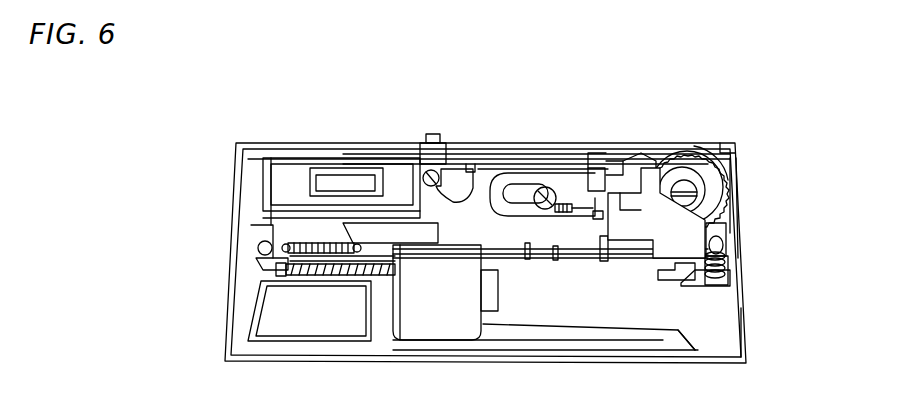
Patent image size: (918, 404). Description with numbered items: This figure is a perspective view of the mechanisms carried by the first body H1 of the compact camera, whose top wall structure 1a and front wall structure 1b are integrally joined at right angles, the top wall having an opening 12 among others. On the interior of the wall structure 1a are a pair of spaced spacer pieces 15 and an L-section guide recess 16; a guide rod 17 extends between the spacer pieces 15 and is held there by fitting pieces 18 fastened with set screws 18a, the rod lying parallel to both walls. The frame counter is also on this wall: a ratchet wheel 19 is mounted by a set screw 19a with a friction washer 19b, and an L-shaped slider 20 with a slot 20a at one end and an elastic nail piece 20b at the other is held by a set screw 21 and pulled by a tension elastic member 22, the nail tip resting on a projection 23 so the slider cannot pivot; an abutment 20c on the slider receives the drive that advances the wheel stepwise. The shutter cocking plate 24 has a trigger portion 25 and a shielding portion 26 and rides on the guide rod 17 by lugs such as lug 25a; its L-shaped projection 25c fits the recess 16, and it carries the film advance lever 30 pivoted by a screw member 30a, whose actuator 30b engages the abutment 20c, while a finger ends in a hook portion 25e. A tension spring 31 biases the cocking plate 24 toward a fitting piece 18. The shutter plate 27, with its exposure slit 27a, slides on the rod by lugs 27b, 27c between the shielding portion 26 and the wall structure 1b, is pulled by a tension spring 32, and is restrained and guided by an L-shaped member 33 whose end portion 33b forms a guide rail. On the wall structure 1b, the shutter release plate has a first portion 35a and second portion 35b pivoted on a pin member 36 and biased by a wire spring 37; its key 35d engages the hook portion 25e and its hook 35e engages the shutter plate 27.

The wall structure 1a is at (717, 139).
The wall structure 1b is at (738, 338).
The opening 12 is at (322, 168).
The spacer pieces 15 is at (252, 213).
The guide recess 16 is at (466, 172).
The guide rod 17 is at (487, 242).
The fitting pieces 18 is at (252, 257).
The set screws 18a is at (252, 237).
The ratchet wheel 19 is at (677, 184).
The set screw 19a is at (688, 150).
The washer 19b is at (730, 150).
The first body H1 is at (734, 168).
The slider 20 is at (550, 192).
The slot 20a is at (506, 188).
The elastic nail piece 20b is at (618, 157).
The abutment 20c is at (609, 152).
The set screw 21 is at (548, 205).
The elastic member 22 is at (585, 150).
The projection 23 is at (670, 160).
The shutter cocking plate 24 is at (422, 305).
The trigger portion 25 is at (352, 215).
The lug 25a is at (480, 264).
The projection 25c is at (425, 126).
The hook portion 25e is at (596, 253).
The shielding portion 26 is at (392, 323).
The shutter plate 27 is at (516, 320).
The exposure slit 27a is at (473, 318).
The lug 27b is at (548, 252).
The lug 27c is at (568, 318).
The film advance lever 30 is at (452, 168).
The screw member 30a is at (412, 170).
The actuator 30b is at (470, 162).
The tension spring 31 is at (290, 235).
The tension spring 32 is at (295, 268).
The L-shaped member 33 is at (655, 332).
The end portion 33b is at (668, 324).
The first portion 35a is at (652, 202).
The second portion 35b is at (672, 331).
The key 35d is at (657, 260).
The hook 35e is at (697, 273).
The pin member 36 is at (714, 264).
The wire spring 37 is at (734, 312).